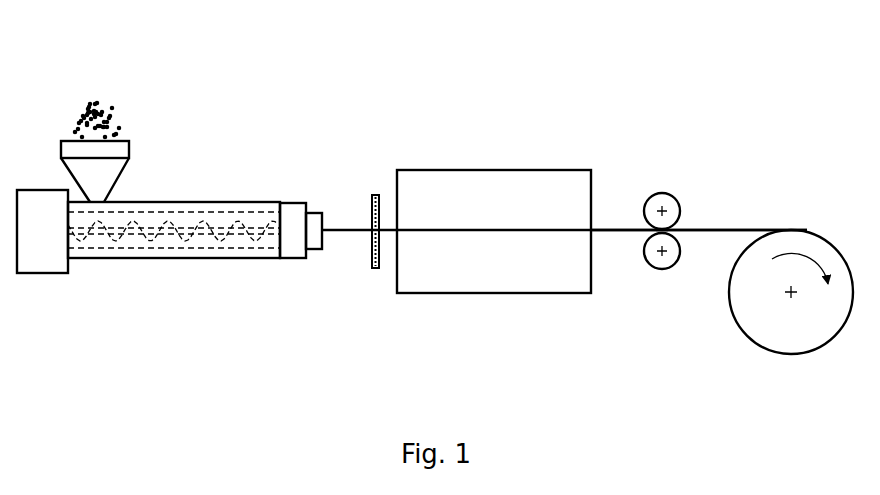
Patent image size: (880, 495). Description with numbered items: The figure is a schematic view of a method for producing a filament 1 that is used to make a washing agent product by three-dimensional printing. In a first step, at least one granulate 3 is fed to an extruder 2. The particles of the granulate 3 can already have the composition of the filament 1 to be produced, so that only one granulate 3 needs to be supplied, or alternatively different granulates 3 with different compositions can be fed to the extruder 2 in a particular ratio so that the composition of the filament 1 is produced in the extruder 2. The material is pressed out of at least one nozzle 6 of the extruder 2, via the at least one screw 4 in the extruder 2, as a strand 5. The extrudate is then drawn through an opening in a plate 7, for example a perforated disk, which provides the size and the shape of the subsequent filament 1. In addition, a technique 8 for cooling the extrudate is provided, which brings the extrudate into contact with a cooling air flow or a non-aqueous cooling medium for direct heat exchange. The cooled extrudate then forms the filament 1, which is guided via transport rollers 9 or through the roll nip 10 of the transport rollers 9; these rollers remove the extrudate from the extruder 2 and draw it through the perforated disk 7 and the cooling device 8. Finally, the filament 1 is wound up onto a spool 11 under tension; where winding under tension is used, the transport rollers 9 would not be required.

The filament 1 is at (730, 230).
The extruder 2 is at (247, 202).
The granulate 3 is at (77, 92).
The screw 4 is at (209, 242).
The strand 5 is at (350, 233).
The nozzle 6 is at (315, 212).
The plate 7 is at (372, 213).
The technique for cooling 8 is at (534, 170).
The transport rollers 9 is at (670, 180).
The roll nip 10 is at (643, 233).
The spool 11 is at (808, 336).